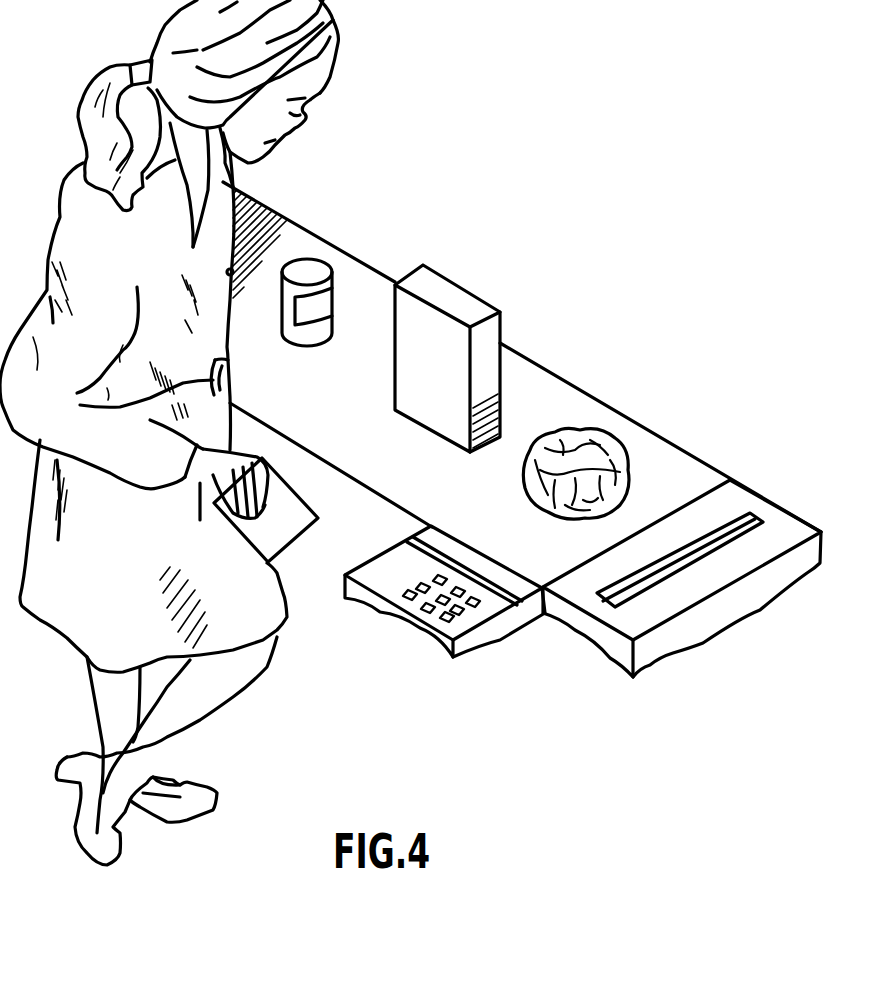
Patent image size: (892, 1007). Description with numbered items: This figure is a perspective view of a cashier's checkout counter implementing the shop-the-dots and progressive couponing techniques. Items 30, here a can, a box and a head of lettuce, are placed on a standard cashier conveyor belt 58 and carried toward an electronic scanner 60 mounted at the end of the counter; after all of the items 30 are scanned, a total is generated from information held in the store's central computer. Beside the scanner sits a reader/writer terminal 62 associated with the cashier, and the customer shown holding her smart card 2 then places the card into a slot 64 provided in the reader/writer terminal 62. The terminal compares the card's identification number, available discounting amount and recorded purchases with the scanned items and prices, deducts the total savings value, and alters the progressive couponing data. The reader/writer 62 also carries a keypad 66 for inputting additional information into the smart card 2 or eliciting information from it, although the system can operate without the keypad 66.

The smart card 2 is at (302, 488).
The items 30 is at (333, 301).
The cashier conveyor belt 58 is at (292, 236).
The electronic scanner 60 is at (747, 513).
The reader/writer terminal 62 is at (674, 572).
The slot 64 is at (445, 609).
The keypad 66 is at (440, 617).